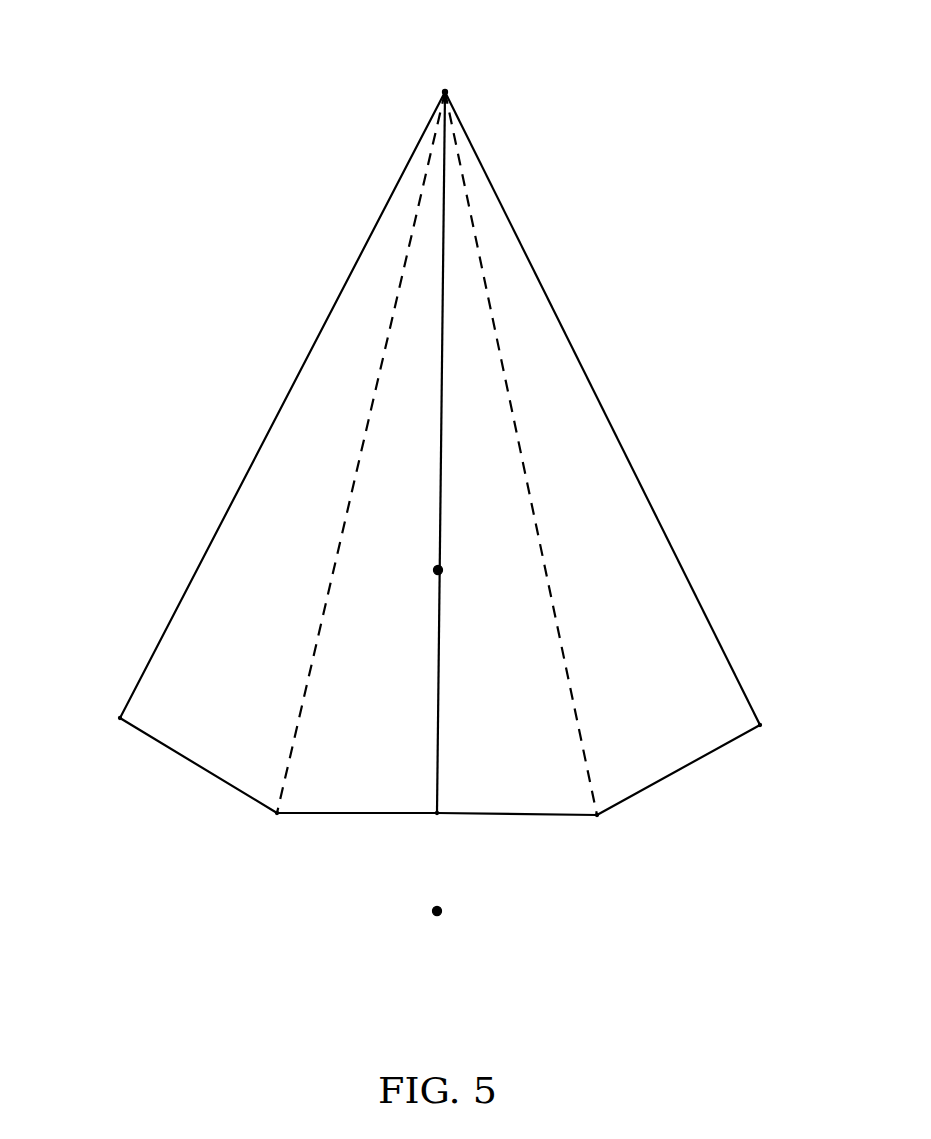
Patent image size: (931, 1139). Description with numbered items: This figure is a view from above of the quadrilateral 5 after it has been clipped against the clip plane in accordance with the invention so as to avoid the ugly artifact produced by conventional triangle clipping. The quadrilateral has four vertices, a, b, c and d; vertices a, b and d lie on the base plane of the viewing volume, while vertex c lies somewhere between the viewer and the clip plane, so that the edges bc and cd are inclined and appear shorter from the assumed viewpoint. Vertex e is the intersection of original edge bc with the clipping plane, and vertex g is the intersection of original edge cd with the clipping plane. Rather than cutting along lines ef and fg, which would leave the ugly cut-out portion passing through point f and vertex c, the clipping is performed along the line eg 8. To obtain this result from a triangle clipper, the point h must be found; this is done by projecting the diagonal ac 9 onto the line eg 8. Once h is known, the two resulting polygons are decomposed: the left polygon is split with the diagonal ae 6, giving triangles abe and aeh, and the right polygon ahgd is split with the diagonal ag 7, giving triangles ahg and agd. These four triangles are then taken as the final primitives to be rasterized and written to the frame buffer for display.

The quadrilateral 5 is at (553, 308).
The diagonal ae 6 is at (326, 605).
The diagonal ag 7 is at (553, 609).
The line eg 8 is at (367, 814).
The diagonal ac 9 is at (437, 708).
The vertex a is at (445, 92).
The vertex b is at (120, 718).
The vertex c is at (437, 911).
The vertex d is at (760, 725).
The vertex e is at (277, 813).
The point f is at (438, 570).
The vertex g is at (597, 815).
The point h is at (437, 813).